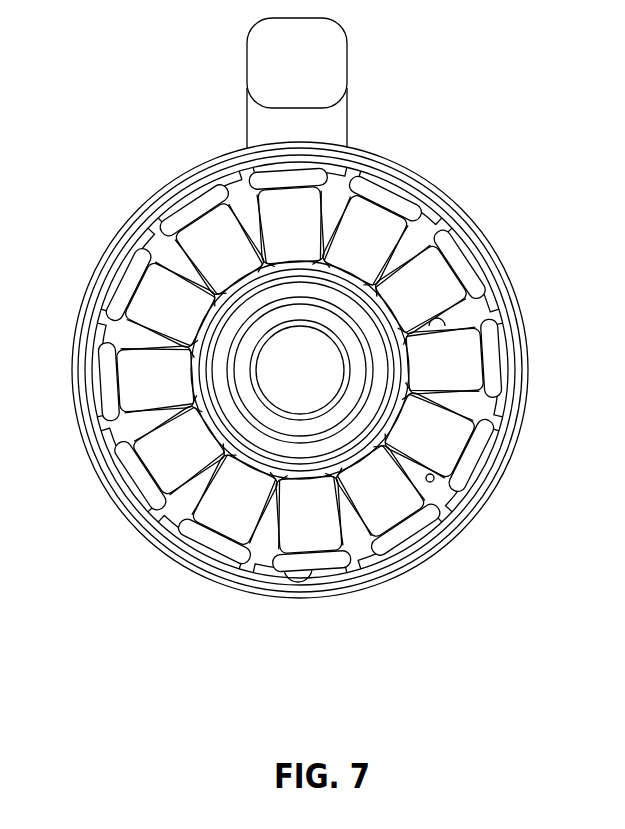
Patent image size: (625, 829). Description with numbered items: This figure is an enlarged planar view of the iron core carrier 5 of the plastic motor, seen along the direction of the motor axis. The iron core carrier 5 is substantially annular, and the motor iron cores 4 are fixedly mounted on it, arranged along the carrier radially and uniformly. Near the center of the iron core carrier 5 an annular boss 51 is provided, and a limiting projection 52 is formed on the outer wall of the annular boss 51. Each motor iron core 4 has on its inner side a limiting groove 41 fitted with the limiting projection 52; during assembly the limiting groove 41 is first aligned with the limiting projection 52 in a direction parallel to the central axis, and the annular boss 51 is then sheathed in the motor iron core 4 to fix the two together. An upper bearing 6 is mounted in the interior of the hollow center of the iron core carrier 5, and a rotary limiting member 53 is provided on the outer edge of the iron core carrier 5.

The iron core carrier 5 is at (521, 300).
The rotary limiting member 53 is at (300, 65).
The motor iron cores 4 is at (110, 382).
The limiting groove 41 is at (236, 283).
The limiting projection 52 is at (215, 305).
The annular boss 51 is at (217, 316).
The upper bearing 6 is at (258, 393).